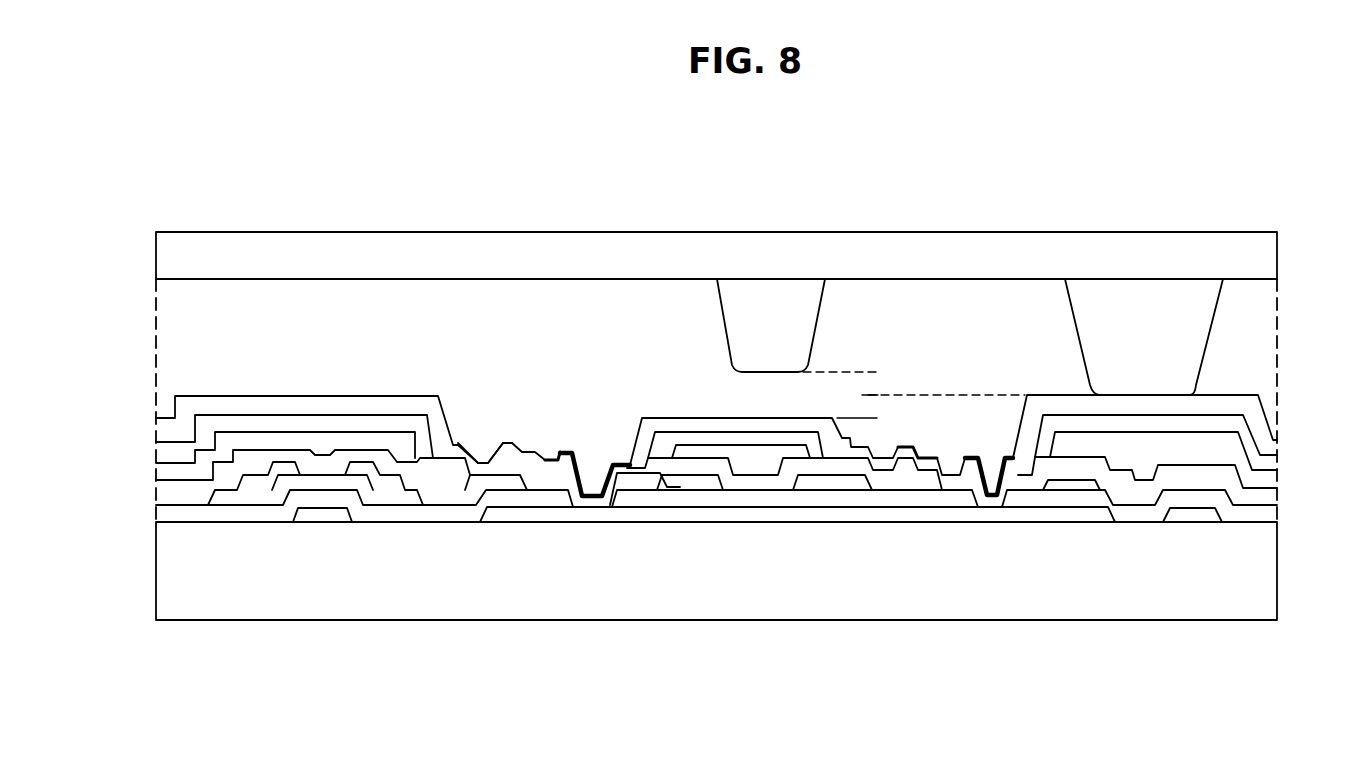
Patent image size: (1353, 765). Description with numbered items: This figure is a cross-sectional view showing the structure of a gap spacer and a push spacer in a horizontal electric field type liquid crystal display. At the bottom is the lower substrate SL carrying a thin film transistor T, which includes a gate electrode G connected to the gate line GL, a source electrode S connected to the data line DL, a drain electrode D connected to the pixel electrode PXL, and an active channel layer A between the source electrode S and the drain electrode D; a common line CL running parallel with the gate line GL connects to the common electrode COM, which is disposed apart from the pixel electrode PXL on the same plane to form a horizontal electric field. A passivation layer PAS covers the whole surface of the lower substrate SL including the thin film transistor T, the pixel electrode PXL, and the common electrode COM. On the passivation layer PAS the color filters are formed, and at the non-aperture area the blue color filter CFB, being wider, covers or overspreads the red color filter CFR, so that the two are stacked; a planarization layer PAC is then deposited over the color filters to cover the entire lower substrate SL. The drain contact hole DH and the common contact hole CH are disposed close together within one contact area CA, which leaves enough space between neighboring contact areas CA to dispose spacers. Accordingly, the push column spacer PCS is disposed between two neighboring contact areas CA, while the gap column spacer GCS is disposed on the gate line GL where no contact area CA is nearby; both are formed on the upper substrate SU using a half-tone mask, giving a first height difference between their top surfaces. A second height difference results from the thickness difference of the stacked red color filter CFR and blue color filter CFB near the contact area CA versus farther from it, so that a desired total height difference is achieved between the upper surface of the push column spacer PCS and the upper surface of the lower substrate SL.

The upper substrate SU is at (386, 253).
The lower substrate SL is at (470, 598).
The pixel electrode PXL is at (517, 442).
The common electrode COM is at (563, 450).
The red color filter CFR is at (272, 447).
The blue color filter CFB is at (327, 423).
The planarization layer PAC is at (385, 408).
The passivation layer PAS is at (182, 492).
The contact area CA is at (506, 403).
The drain contact hole DH is at (484, 432).
The common contact hole CH is at (591, 468).
The push column spacer PCS is at (797, 303).
The gap column spacer GCS is at (1090, 330).
The source electrode S is at (243, 487).
The gate electrode G is at (318, 515).
The active channel layer A is at (370, 492).
The drain electrode D is at (410, 492).
The thin film transistor T is at (540, 606).
The data line DL is at (690, 485).
The common line CL is at (748, 515).
The gate line GL is at (1188, 515).